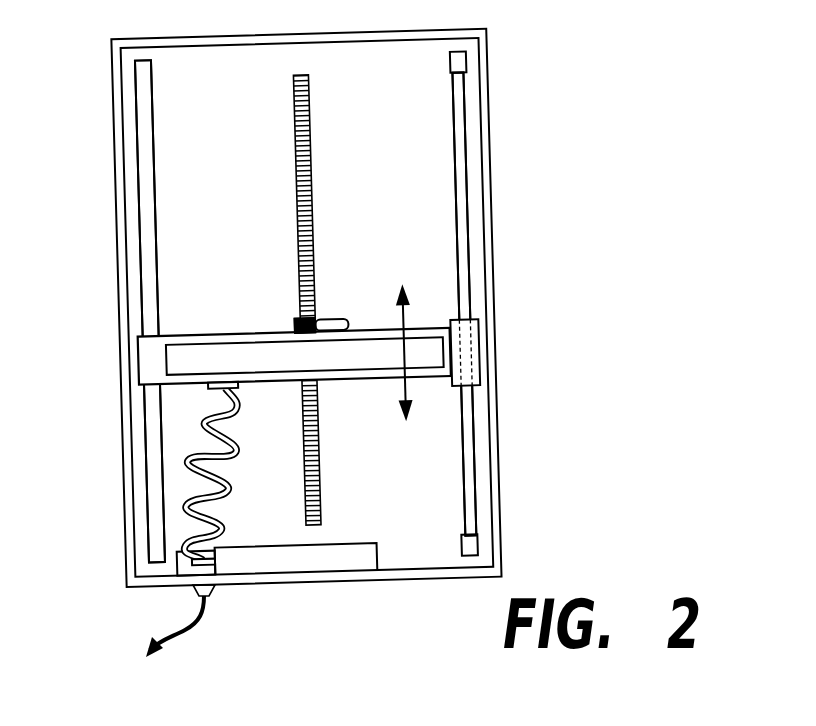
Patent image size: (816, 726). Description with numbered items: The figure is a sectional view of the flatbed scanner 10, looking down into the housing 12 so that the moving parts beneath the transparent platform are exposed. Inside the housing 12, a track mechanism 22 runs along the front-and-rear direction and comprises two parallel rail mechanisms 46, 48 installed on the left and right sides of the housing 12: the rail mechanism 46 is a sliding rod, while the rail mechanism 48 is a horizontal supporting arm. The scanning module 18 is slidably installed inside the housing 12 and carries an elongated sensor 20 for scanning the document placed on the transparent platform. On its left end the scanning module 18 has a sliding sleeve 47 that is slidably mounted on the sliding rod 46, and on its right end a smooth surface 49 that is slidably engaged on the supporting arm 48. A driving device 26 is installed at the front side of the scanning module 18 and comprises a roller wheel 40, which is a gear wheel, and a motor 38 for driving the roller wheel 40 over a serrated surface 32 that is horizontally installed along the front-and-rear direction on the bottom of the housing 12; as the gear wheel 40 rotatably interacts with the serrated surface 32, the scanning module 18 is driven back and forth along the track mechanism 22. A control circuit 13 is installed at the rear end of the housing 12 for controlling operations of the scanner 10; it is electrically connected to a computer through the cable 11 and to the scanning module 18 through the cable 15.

The flatbed scanner 10 is at (585, 149).
The cable 11 is at (160, 637).
The housing 12 is at (247, 578).
The control circuit 13 is at (312, 566).
The cable 15 is at (217, 481).
The scanning module 18 is at (152, 368).
The elongated sensor 20 is at (350, 366).
The track mechanism 22 is at (428, 162).
The driving device 26 is at (255, 312).
The serrated surface 32 is at (322, 497).
The motor 38 is at (333, 318).
The roller wheel 40 is at (300, 318).
The rail mechanism 46 is at (457, 97).
The sliding sleeve 47 is at (468, 386).
The rail mechanism 48 is at (143, 97).
The smooth surface 49 is at (157, 335).